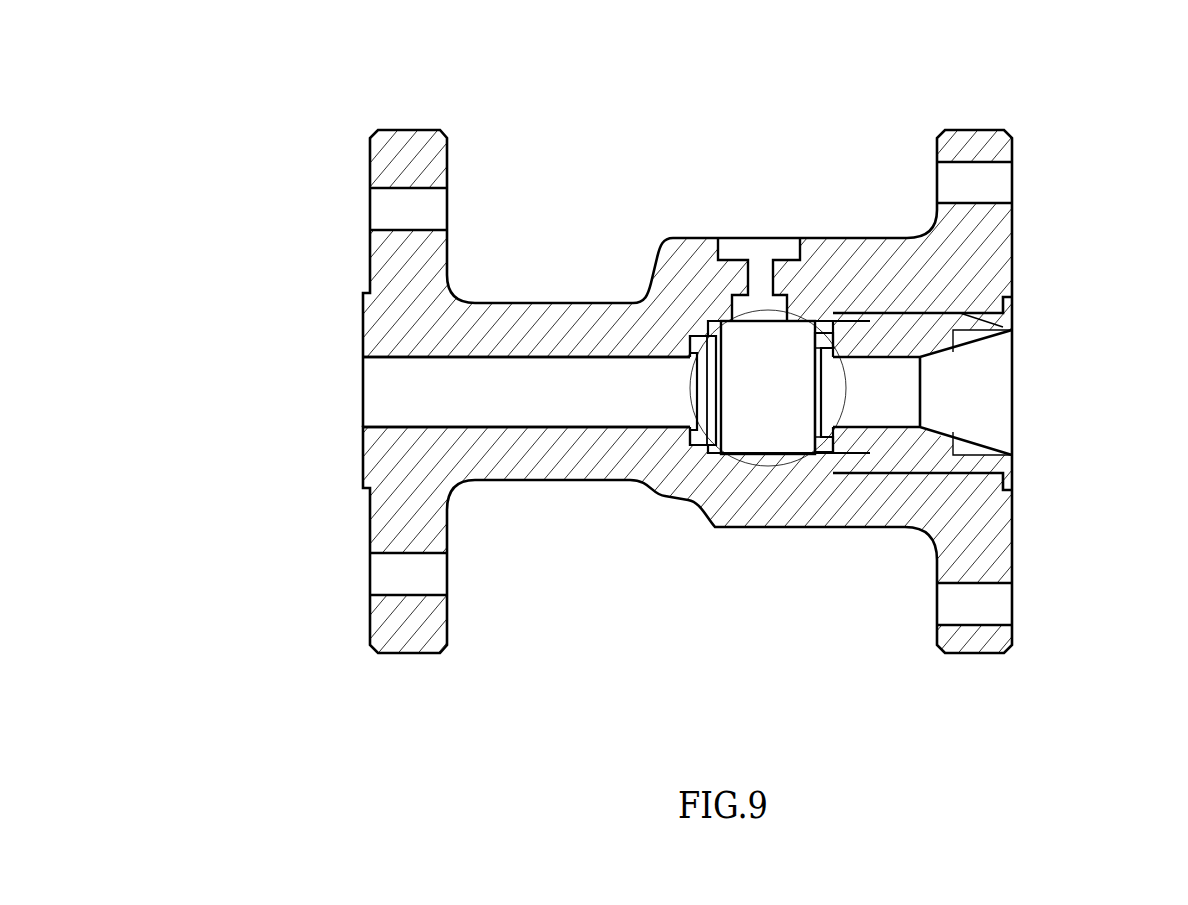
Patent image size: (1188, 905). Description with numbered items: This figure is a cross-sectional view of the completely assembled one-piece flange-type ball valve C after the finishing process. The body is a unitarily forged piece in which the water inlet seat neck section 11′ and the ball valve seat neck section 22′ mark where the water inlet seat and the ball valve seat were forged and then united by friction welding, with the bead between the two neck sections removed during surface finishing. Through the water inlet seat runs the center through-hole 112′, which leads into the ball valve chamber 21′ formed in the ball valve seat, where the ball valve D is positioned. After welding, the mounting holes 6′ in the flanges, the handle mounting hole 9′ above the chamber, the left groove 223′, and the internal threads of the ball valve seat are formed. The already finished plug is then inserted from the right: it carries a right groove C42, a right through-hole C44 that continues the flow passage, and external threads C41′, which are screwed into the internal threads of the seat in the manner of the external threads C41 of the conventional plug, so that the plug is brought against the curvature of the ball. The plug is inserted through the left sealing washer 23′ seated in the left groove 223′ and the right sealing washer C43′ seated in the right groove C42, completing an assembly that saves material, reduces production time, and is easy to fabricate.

The one-piece flange-type ball valve C is at (622, 113).
The mounting holes 6′ is at (383, 215).
The handle mounting hole 9′ is at (757, 247).
The water inlet seat neck section 11′ is at (598, 302).
The ball valve seat neck section 22′ is at (637, 288).
The center through-hole 112′ is at (519, 388).
The ball valve chamber 21′ is at (803, 455).
The left sealing washer 23′ is at (689, 449).
The left groove 223′ is at (700, 447).
The ball valve D is at (670, 587).
The external threads C41 is at (960, 312).
The external threads C41′ is at (960, 328).
The right through-hole C44 is at (948, 397).
The right groove C42 is at (818, 456).
The right sealing washer C43′ is at (823, 458).